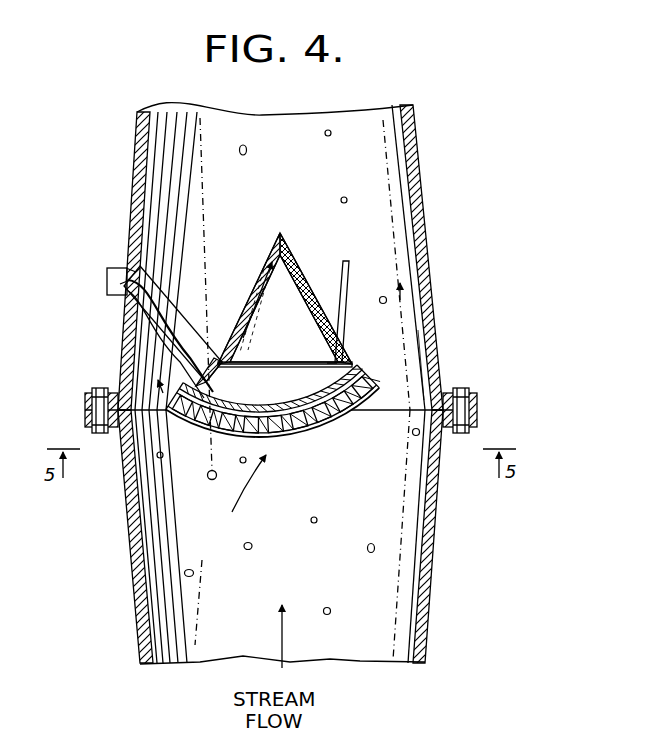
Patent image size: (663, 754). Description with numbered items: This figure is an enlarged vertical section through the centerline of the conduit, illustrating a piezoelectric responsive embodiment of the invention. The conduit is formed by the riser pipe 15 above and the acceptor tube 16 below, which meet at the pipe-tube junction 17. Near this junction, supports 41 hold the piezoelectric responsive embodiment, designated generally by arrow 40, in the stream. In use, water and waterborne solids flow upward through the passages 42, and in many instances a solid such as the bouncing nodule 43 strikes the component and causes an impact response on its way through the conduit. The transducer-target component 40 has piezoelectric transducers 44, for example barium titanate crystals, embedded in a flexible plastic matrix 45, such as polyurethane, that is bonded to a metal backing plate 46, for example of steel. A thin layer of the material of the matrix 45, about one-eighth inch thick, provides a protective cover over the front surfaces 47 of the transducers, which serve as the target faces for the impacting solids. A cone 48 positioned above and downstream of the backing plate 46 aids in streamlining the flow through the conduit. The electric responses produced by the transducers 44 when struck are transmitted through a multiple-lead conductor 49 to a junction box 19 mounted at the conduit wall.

The riser pipe 15 is at (423, 174).
The acceptor tube 16 is at (131, 547).
The pipe-tube junction 17 is at (85, 410).
The junction box 19 is at (107, 282).
The transducer-target component 40 is at (239, 497).
The supports 41 is at (172, 300).
The passages 42 is at (422, 370).
The bouncing nodule 43 is at (207, 478).
The piezoelectric transducers 44 is at (320, 436).
The flexible plastic matrix 45 is at (353, 373).
The metal backing plate 46 is at (282, 402).
The front surfaces 47 is at (362, 427).
The cone 48 is at (297, 263).
The multiple-lead conductor 49 is at (150, 338).